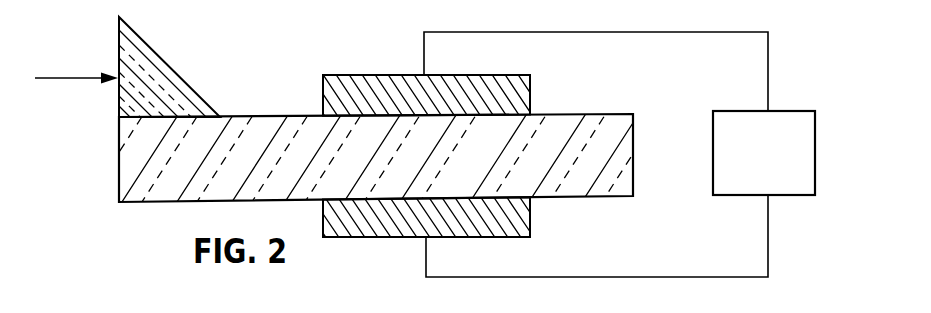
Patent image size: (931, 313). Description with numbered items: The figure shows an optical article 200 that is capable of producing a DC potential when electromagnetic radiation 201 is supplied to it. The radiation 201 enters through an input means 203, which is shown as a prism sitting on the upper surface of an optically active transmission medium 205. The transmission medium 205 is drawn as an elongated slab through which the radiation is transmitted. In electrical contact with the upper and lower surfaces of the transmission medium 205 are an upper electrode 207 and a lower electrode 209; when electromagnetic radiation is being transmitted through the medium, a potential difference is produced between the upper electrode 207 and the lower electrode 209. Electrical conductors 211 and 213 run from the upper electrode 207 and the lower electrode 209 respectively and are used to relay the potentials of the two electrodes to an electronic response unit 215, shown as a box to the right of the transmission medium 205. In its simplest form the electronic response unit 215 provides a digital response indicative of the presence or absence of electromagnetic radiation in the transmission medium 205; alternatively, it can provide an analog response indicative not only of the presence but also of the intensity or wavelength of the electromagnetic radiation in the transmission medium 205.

The optical article 200 is at (86, 212).
The electromagnetic radiation 201 is at (67, 78).
The input means 203 is at (168, 62).
The optically active transmission medium 205 is at (633, 155).
The upper electrode 207 is at (530, 97).
The lower electrode 209 is at (533, 217).
The electrical conductor 211 is at (675, 33).
The electrical conductor 213 is at (660, 276).
The electronic response unit 215 is at (713, 173).